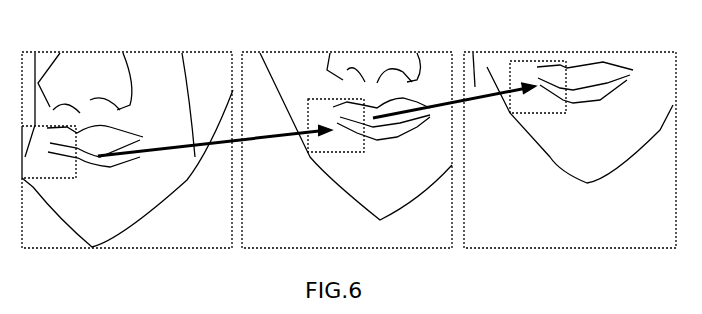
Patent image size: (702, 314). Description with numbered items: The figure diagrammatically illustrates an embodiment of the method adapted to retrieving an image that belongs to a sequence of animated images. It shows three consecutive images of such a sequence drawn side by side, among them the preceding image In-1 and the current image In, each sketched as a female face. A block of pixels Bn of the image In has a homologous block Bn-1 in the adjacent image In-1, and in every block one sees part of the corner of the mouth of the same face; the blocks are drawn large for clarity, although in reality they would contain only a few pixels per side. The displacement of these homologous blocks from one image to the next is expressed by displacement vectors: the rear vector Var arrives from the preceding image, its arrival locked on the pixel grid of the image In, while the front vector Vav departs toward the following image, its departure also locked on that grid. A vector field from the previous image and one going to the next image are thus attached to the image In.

The block of pixels in the preceding image Bn-1 is at (27, 52).
The block of pixels Bn is at (318, 99).
The rear displacement vector Var is at (182, 53).
The front displacement vector Vav is at (473, 53).
The preceding image In-1 is at (125, 248).
The current image In is at (390, 248).